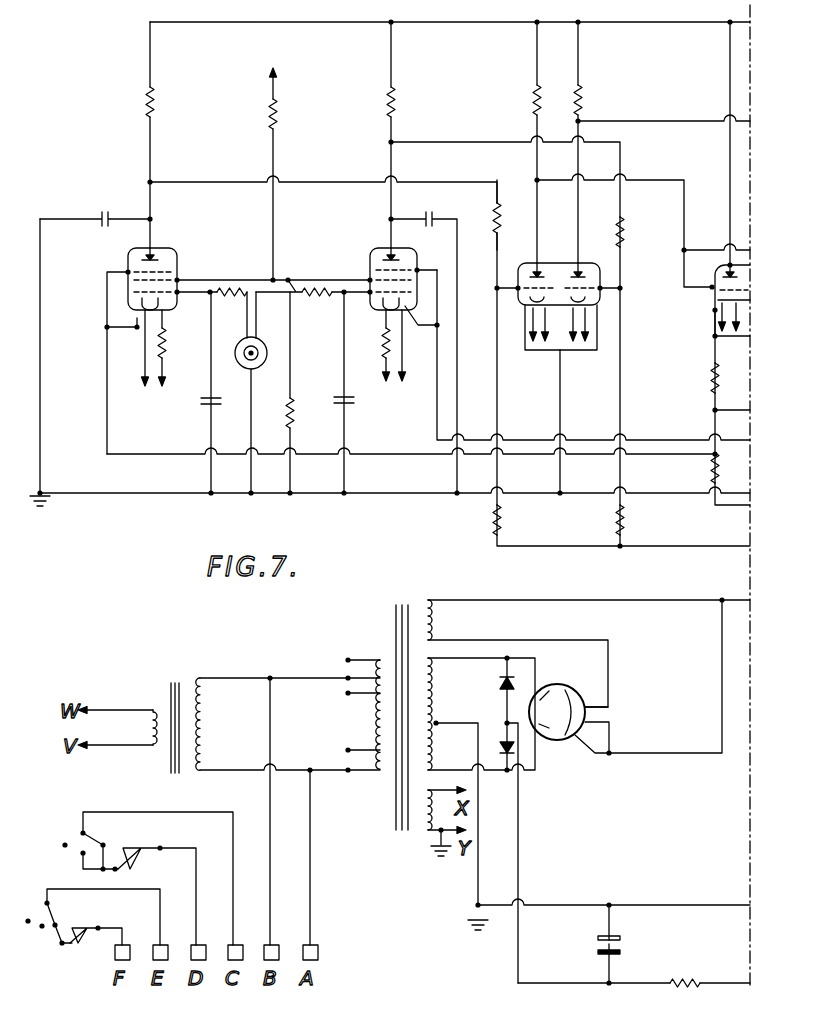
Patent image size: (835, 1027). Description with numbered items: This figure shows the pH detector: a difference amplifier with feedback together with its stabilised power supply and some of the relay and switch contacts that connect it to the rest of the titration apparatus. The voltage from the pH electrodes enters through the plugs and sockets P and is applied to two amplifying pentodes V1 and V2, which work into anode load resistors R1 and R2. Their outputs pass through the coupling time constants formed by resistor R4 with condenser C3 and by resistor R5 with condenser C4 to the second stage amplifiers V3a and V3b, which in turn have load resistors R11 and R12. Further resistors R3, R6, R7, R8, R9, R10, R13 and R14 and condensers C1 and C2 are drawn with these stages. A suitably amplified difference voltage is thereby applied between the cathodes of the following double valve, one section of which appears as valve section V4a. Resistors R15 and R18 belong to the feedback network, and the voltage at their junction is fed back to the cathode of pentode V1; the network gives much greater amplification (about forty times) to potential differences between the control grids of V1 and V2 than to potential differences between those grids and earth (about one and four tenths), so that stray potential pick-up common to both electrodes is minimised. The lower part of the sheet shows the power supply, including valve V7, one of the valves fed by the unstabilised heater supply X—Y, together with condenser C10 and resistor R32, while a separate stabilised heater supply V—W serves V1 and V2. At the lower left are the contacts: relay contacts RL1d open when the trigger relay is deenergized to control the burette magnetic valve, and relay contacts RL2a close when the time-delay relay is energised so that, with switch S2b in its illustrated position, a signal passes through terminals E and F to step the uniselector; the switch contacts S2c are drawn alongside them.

The load resistor R1 is at (154, 112).
The load resistor R2 is at (395, 116).
The resistor R3 is at (279, 117).
The resistor R4 is at (228, 313).
The resistor R5 is at (317, 310).
The heater resistor of V1 R6 is at (177, 350).
The heater resistor of V2 R7 is at (371, 343).
The resistor R8 is at (277, 413).
The grid resistor of V3a R9 is at (500, 214).
The grid resistor of V3b R10 is at (624, 232).
The load resistor R11 is at (541, 104).
The load resistor R12 is at (583, 106).
The resistor R13 is at (503, 527).
The resistor R14 is at (626, 527).
The feedback resistor R15 is at (711, 386).
The feedback resistor R18 is at (698, 468).
The resistor R32 is at (674, 995).
The capacitor C1 is at (106, 228).
The capacitor C2 is at (424, 352).
The condenser C3 is at (208, 403).
The condenser C4 is at (329, 392).
The electrolytic capacitor C10 is at (600, 940).
The amplifying pentode V1 is at (182, 267).
The amplifying pentode V2 is at (387, 312).
The second stage amplifier V3a is at (520, 266).
The second stage amplifier V3b is at (600, 266).
The valve section V4a is at (712, 293).
The valve V7 is at (625, 682).
The plugs and sockets P is at (268, 351).
The switch S2b is at (92, 917).
The switch contact S2c is at (147, 878).
The relay switch contacts RL1d is at (157, 886).
The relay switch contacts RL2a is at (93, 948).